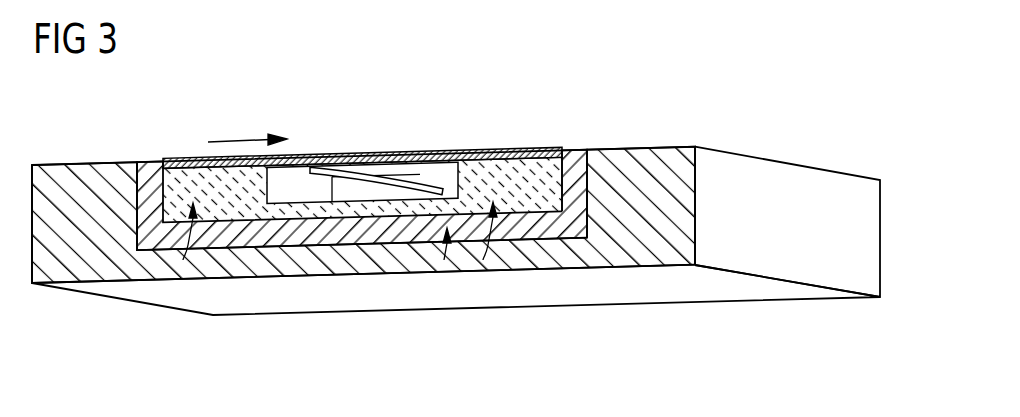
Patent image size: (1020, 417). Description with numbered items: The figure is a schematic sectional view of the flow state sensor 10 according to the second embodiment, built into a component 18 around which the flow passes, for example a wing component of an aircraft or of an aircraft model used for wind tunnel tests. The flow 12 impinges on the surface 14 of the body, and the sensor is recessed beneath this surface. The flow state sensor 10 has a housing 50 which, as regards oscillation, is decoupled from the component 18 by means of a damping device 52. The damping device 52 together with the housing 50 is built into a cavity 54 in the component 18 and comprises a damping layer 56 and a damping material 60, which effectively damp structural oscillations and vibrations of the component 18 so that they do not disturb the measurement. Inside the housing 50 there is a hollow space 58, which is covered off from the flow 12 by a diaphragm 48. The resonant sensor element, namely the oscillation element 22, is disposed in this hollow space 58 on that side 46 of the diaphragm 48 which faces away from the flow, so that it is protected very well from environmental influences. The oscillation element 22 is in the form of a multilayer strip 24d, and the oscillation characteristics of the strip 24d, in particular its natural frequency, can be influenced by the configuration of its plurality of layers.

The flow state sensor 10 is at (660, 92).
The flow 12 is at (237, 140).
The surface 14 is at (88, 162).
The component 18 is at (785, 161).
The oscillation element 22 is at (367, 173).
The multilayer strip 24d is at (376, 152).
The side of the diaphragm facing away from the flow 46 is at (438, 158).
The diaphragm 48 is at (293, 155).
The housing 50 is at (183, 260).
The damping device 52 is at (444, 260).
The cavity 54 is at (585, 197).
The damping layer 56 is at (408, 228).
The hollow space 58 is at (362, 190).
The damping material 60 is at (573, 150).